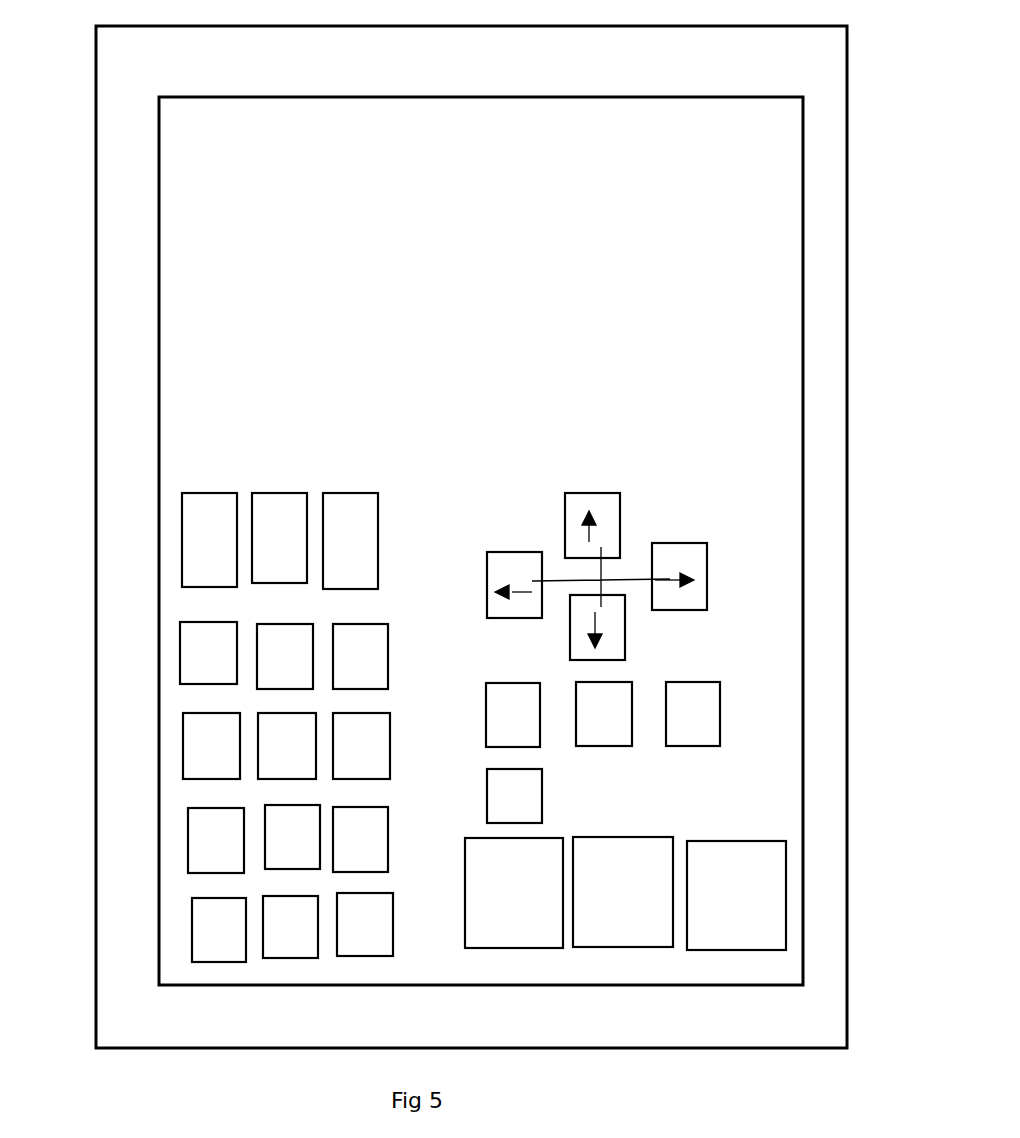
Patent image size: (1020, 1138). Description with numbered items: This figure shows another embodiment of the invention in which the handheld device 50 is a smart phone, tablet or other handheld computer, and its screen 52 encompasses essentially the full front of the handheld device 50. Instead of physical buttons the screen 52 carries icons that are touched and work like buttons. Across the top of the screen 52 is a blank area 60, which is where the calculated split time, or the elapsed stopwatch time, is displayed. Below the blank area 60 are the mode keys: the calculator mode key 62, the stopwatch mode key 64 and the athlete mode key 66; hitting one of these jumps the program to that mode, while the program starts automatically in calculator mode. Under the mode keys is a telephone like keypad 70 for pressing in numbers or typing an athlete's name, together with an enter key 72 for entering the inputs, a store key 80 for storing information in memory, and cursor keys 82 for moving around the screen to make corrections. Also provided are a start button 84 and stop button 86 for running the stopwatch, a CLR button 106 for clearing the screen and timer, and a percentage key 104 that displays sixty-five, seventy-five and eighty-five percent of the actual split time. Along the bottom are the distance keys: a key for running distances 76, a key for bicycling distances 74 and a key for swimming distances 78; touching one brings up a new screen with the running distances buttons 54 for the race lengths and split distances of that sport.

The handheld device 50 is at (846, 747).
The screen 52 is at (590, 249).
The blank area 60 is at (448, 217).
The calculator mode key 62 is at (182, 533).
The stopwatch mode key 64 is at (278, 573).
The athlete mode key 66 is at (350, 498).
The telephone like keypad 70 is at (233, 800).
The enter key 72 is at (215, 953).
The store key 80 is at (363, 948).
The cursor keys 82 is at (605, 578).
The start button 84 is at (517, 693).
The stop button 86 is at (692, 698).
The CLR button 106 is at (612, 732).
The percentage key 104 is at (546, 802).
The running distances key 76 is at (498, 928).
The bicycling distances key 74 is at (652, 942).
The swimming distances key 78 is at (762, 878).
The running distances buttons 54 is at (633, 963).